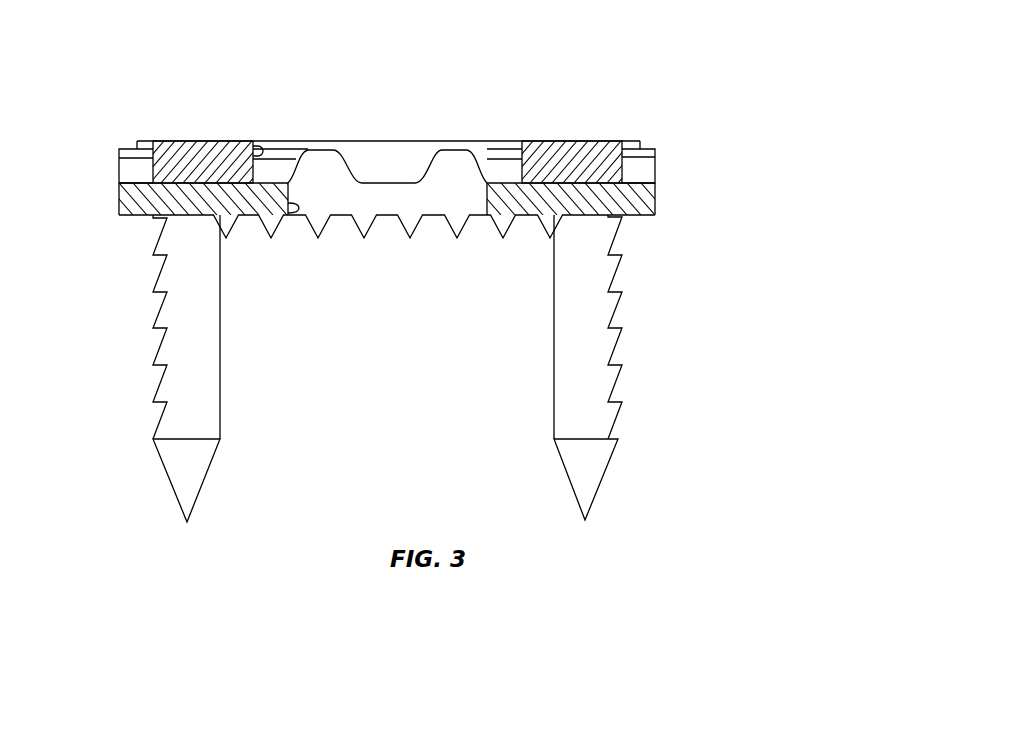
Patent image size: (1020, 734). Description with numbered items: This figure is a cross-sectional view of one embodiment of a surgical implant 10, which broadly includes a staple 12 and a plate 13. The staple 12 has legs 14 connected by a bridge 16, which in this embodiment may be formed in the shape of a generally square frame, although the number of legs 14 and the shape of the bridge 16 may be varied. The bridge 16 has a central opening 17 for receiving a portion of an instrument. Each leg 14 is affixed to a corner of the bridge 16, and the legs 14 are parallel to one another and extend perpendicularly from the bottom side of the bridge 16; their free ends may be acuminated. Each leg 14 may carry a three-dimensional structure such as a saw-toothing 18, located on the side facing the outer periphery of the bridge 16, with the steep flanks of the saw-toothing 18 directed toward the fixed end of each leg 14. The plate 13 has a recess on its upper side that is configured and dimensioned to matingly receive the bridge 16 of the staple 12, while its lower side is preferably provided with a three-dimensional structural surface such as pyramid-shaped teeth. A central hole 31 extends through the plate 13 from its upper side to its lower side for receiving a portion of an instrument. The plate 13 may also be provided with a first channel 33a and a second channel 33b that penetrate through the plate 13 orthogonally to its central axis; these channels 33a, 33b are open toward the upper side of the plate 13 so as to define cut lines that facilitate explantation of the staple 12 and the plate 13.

The surgical implant 10 is at (613, 45).
The staple 12 is at (237, 141).
The plate 13 is at (657, 208).
The legs 14 is at (163, 463).
The bridge 16 is at (542, 141).
The central opening 17 is at (260, 148).
The saw-toothing 18 is at (152, 365).
The central hole 31 is at (294, 210).
The first channel 33a is at (127, 170).
The second channel 33b is at (348, 165).